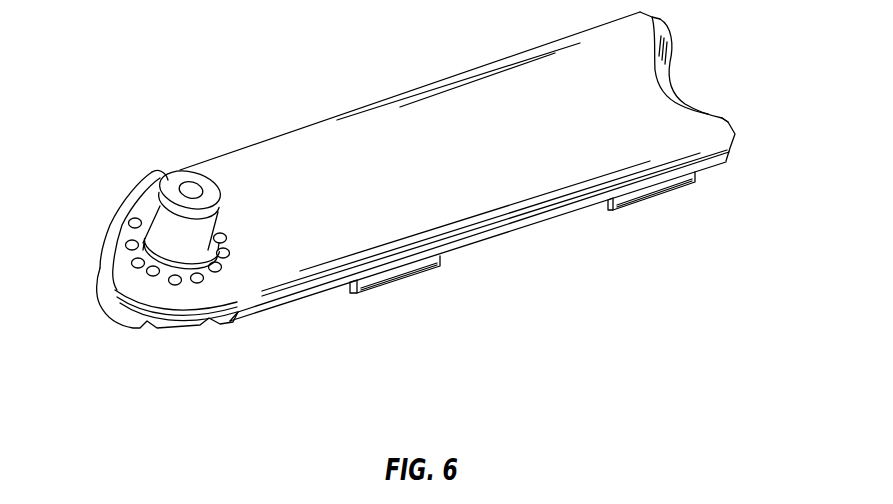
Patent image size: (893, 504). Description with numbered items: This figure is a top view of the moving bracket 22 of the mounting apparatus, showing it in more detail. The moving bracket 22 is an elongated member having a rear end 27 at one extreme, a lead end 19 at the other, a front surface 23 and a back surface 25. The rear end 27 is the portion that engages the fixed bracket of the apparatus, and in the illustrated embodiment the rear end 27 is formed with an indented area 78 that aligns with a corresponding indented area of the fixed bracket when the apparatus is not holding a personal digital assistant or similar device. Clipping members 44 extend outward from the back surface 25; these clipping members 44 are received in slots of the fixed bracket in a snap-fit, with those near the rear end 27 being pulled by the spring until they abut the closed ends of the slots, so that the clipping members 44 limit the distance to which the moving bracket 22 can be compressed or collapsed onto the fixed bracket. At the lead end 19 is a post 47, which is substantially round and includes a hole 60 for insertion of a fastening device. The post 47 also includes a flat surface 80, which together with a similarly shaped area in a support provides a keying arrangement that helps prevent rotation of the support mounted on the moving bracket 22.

The lead end 19 is at (110, 293).
The moving bracket 22 is at (517, 230).
The front surface 23 is at (368, 122).
The back surface 25 is at (288, 306).
The rear end 27 is at (730, 127).
The clipping members 44 is at (400, 277).
The post 47 is at (150, 213).
The hole 60 is at (189, 182).
The indented area 78 is at (690, 88).
The flat surface 80 is at (195, 260).